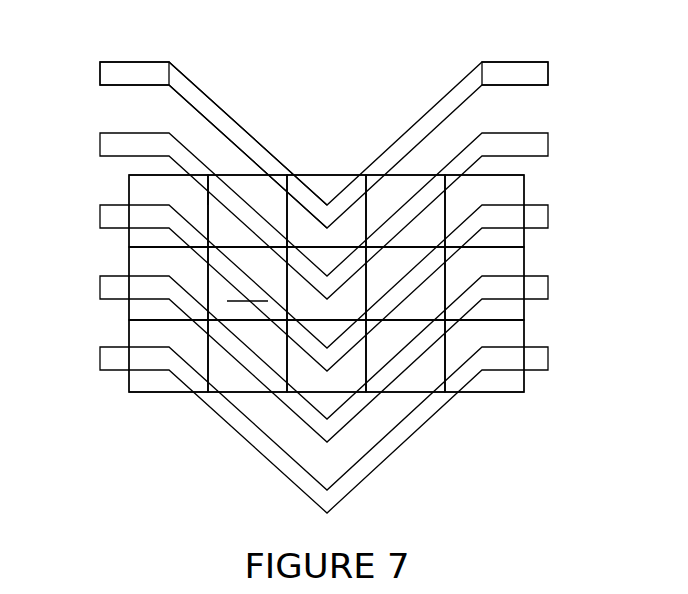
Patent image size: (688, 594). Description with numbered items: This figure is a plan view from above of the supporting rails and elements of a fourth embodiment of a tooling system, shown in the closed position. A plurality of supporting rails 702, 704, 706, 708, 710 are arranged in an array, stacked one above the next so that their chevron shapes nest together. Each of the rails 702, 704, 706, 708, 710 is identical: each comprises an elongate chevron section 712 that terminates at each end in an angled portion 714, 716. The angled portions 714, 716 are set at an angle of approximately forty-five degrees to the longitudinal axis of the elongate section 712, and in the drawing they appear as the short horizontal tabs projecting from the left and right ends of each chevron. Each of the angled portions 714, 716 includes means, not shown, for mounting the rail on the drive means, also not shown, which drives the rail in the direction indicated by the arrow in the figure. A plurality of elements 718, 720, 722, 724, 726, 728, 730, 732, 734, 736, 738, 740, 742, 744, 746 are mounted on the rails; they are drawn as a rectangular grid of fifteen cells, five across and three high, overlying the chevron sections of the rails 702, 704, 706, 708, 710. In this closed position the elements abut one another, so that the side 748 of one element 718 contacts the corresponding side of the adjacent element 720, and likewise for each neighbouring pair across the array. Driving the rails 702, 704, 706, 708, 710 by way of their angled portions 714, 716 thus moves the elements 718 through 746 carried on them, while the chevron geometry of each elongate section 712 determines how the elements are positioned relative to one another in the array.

The supporting rail 702 is at (457, 91).
The supporting rail 704 is at (540, 142).
The supporting rail 706 is at (540, 215).
The supporting rail 708 is at (540, 287).
The supporting rail 710 is at (540, 357).
The elongate chevron section 712 is at (247, 141).
The angled portion 714 is at (137, 70).
The angled portion 716 is at (540, 72).
The element 718 is at (148, 234).
The element 720 is at (227, 234).
The element 722 is at (306, 234).
The element 724 is at (385, 234).
The element 726 is at (464, 234).
The element 728 is at (148, 301).
The element 730 is at (216, 192).
The element 732 is at (306, 301).
The element 734 is at (385, 301).
The element 736 is at (464, 301).
The element 738 is at (148, 369).
The element 740 is at (227, 369).
The element 742 is at (306, 369).
The element 744 is at (385, 369).
The element 746 is at (464, 369).
The side of element 748 is at (205, 192).